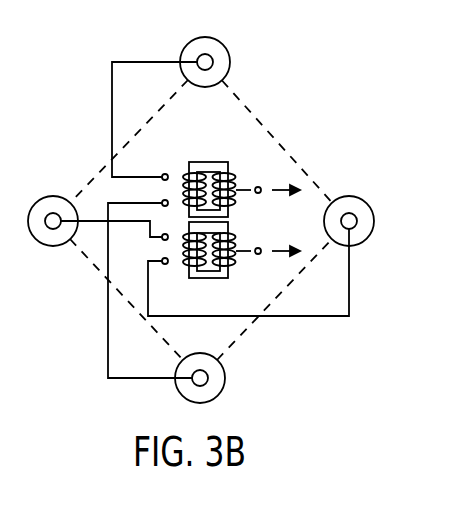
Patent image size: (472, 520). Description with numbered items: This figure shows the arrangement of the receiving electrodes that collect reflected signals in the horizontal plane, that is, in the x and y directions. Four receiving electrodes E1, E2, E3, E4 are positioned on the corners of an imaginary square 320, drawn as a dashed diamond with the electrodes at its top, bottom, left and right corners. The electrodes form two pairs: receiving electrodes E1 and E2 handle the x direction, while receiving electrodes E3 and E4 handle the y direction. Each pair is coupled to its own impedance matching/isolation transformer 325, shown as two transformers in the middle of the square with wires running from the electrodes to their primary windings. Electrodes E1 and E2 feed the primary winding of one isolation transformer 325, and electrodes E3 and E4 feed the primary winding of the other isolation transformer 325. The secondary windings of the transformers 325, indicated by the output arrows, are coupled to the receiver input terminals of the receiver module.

The imaginary square 320 is at (213, 220).
The impedance matching/isolation transformer 325 is at (241, 213).
The receiving electrode E1 is at (205, 45).
The receiving electrode E2 is at (221, 378).
The receiving electrode E3 is at (53, 203).
The receiving electrode E4 is at (350, 202).